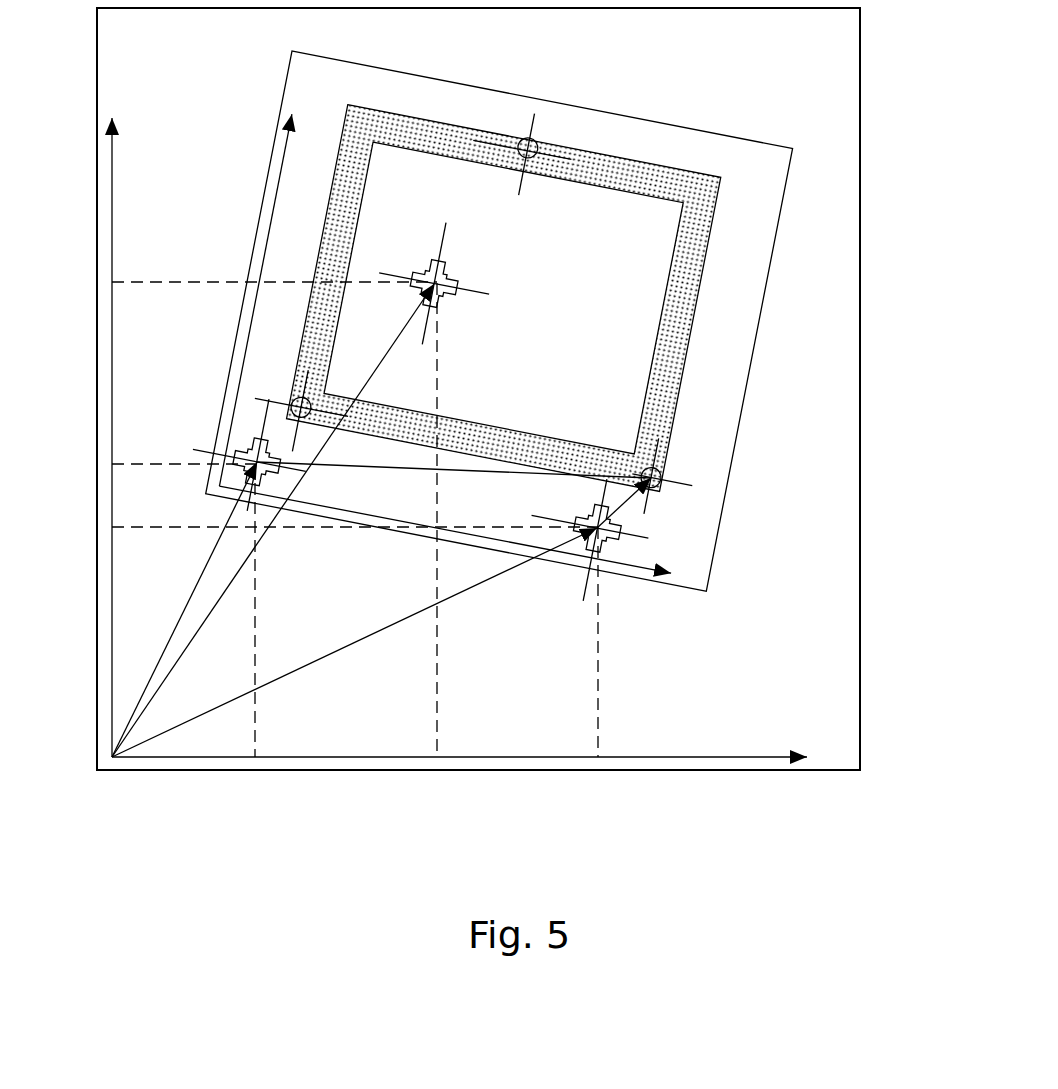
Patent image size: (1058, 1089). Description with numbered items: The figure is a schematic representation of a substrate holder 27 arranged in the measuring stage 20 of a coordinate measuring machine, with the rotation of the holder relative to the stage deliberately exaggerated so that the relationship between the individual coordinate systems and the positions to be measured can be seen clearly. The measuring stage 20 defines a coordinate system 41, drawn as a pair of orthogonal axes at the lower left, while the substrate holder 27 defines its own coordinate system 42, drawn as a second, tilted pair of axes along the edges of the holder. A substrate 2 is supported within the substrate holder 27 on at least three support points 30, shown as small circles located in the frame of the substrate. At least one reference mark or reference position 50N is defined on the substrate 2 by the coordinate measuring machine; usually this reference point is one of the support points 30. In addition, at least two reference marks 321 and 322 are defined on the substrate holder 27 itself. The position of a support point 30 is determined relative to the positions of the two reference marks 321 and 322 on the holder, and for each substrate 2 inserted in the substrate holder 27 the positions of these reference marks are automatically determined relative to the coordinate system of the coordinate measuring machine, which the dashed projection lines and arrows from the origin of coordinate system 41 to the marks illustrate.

The measuring stage 20 is at (820, 23).
The coordinate system 41 is at (111, 215).
The coordinate system 42 is at (283, 153).
The substrate holder 27 is at (725, 417).
The substrate 2 is at (626, 259).
The support points 30 is at (527, 138).
The reference position 50N is at (452, 273).
The reference mark 321 is at (245, 455).
The reference mark 322 is at (606, 520).